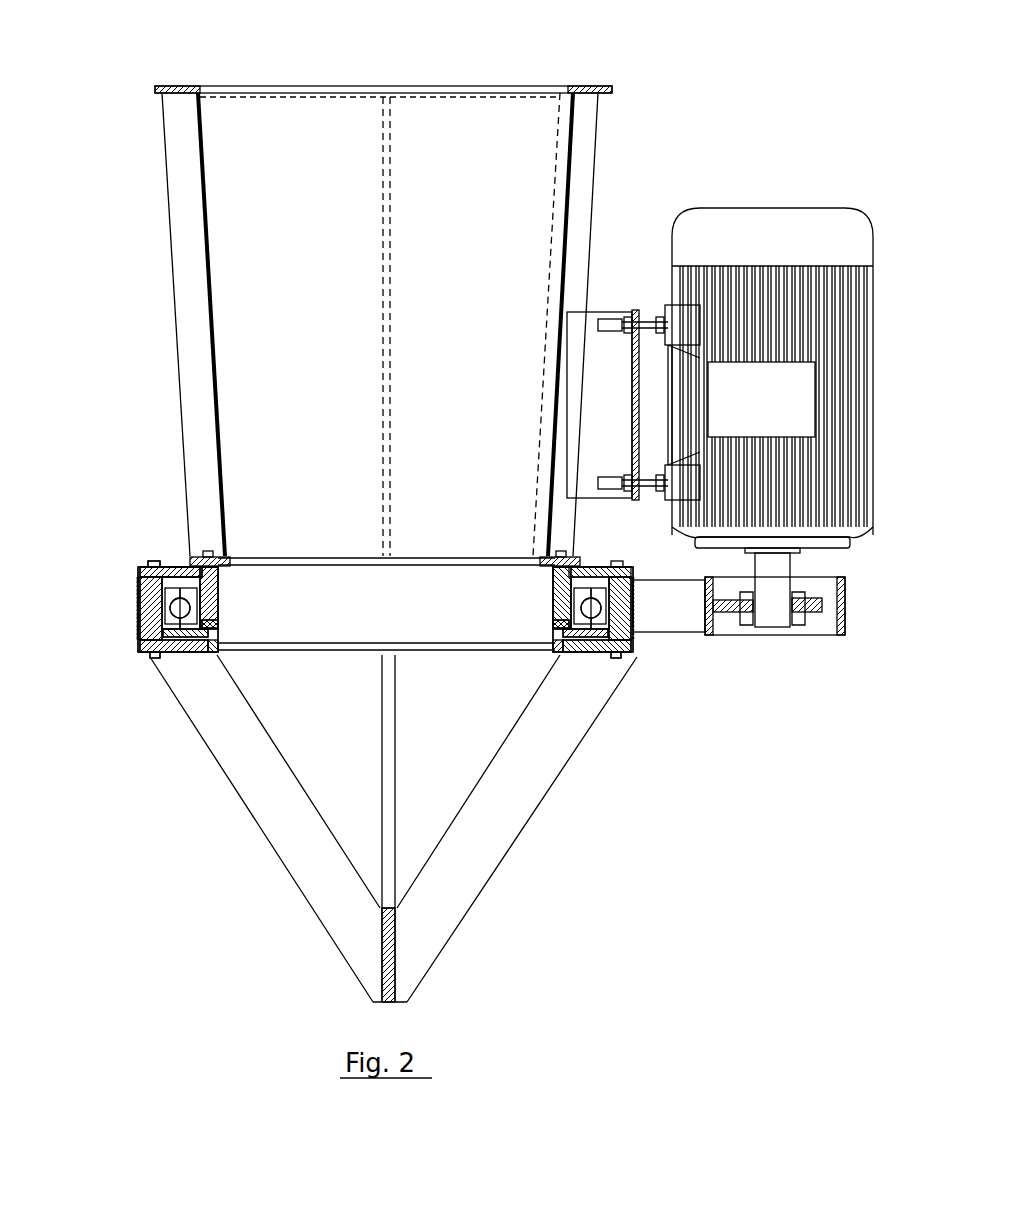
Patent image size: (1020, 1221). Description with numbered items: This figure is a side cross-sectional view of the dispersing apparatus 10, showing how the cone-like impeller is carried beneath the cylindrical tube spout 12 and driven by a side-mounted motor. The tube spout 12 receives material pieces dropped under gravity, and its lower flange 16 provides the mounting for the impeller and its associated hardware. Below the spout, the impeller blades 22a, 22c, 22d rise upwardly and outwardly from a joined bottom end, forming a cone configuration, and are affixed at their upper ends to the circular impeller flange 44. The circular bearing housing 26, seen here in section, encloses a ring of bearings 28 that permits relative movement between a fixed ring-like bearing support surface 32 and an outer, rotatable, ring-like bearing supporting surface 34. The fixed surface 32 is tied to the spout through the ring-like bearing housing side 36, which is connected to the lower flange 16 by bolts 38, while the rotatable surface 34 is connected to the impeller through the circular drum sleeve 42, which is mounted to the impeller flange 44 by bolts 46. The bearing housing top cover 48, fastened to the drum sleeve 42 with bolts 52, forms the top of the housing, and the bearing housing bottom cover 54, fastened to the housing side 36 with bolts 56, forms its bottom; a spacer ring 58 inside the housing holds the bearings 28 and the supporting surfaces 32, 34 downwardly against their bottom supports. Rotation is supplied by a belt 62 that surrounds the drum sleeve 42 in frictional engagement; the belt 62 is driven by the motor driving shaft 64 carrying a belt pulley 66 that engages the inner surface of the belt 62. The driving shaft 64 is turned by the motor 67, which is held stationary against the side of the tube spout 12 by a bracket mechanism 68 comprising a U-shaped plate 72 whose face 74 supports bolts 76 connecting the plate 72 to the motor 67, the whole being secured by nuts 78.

The dispersing apparatus 10 is at (652, 114).
The cylindrical tube spout 12 is at (291, 105).
The lower flange 16 is at (178, 560).
The impeller blade 22a is at (528, 790).
The impeller blade 22c is at (246, 790).
The impeller blade 22d is at (392, 745).
The circular bearing housing 26 is at (122, 584).
The ring of bearings 28 is at (202, 607).
The fixed ring-like bearing support surface 32 is at (212, 625).
The outer rotatable ring-like bearing supporting surface 34 is at (165, 622).
The ring-like bearing housing side 36 is at (220, 580).
The bolts 38 is at (206, 562).
The circular drum sleeve 42 is at (150, 618).
The impeller flange 44 is at (152, 650).
The bolts 46 is at (155, 658).
The bearing housing top cover 48 is at (140, 590).
The bolts 52 is at (150, 580).
The bearing housing bottom cover 54 is at (195, 652).
The bolts 56 is at (215, 645).
The spacer ring 58 is at (158, 568).
The belt 62 is at (137, 603).
The motor driving shaft 64 is at (772, 628).
The belt pulley 66 is at (842, 638).
The motor 67 is at (722, 216).
The bracket mechanism 68 is at (628, 316).
The U-shaped plate 72 is at (600, 397).
The face 74 is at (634, 408).
The bolts 76 is at (598, 326).
The nuts 78 is at (632, 318).